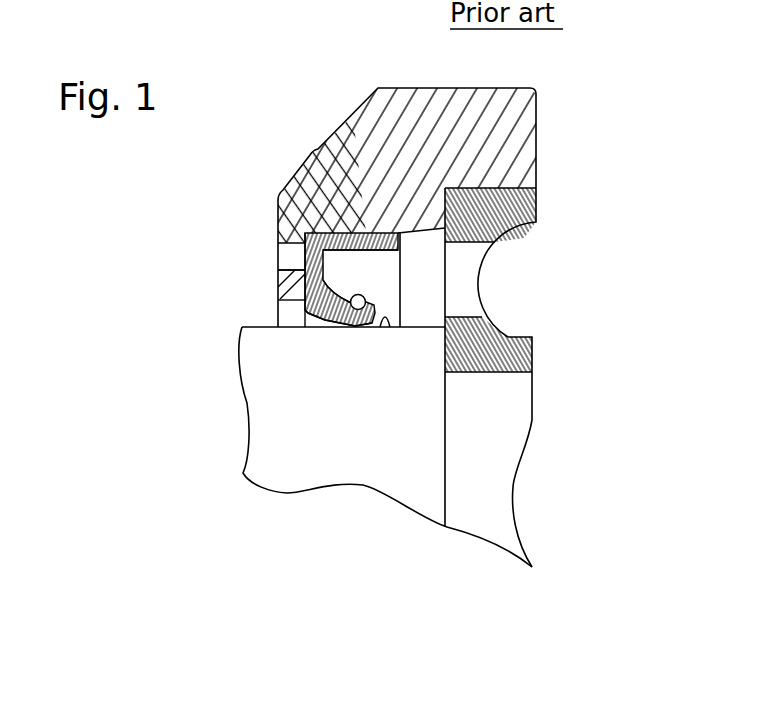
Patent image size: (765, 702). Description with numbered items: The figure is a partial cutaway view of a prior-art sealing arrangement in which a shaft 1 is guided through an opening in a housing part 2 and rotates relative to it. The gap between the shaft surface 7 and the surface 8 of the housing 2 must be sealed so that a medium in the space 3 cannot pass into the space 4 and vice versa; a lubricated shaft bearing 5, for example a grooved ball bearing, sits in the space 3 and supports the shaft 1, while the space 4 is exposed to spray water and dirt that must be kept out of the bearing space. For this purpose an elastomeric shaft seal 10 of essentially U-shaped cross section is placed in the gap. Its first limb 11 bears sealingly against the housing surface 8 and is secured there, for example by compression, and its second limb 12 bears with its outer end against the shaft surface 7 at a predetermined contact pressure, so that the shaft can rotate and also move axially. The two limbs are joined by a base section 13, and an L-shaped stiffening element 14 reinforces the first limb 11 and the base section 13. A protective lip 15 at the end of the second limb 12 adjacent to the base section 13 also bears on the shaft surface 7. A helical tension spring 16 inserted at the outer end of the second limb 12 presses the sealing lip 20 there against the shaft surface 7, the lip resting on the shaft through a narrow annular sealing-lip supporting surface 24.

The shaft 1 is at (420, 392).
The housing part 2 is at (510, 133).
The space 3 is at (435, 277).
The space 4 is at (286, 314).
The shaft bearing 5 is at (512, 230).
The shaft surface 7 is at (380, 327).
The surface of the housing 8 is at (360, 233).
The shaft seal 10 is at (283, 252).
The first limb 11 is at (302, 152).
The second limb 12 is at (325, 322).
The base section 13 is at (294, 257).
The L-shaped stiffening element 14 is at (304, 232).
The protective lip 15 is at (312, 324).
The helical tension spring 16 is at (366, 299).
The sealing lip 20 is at (352, 322).
The sealing-lip supporting surface 24 is at (366, 322).